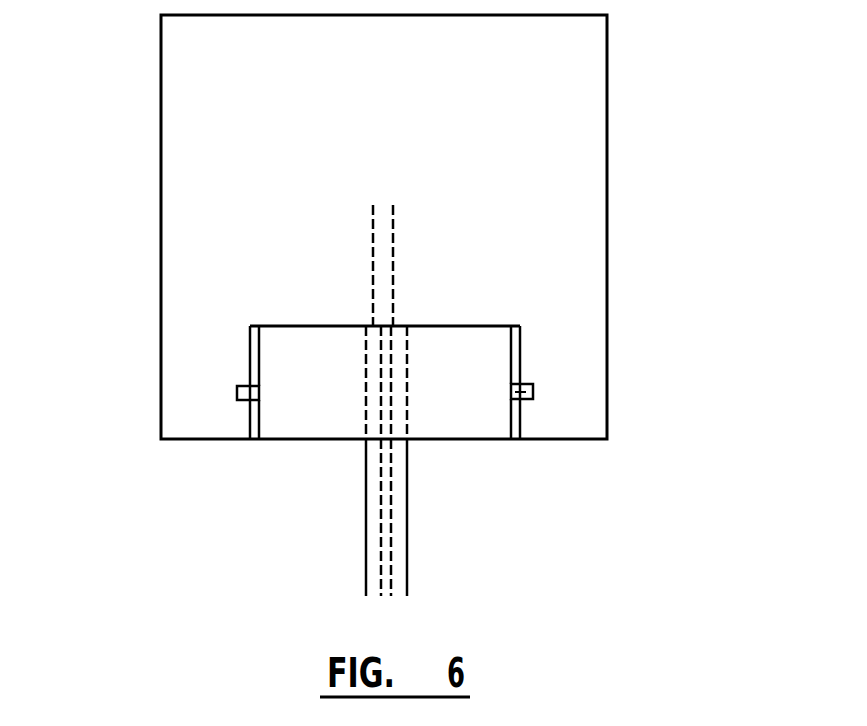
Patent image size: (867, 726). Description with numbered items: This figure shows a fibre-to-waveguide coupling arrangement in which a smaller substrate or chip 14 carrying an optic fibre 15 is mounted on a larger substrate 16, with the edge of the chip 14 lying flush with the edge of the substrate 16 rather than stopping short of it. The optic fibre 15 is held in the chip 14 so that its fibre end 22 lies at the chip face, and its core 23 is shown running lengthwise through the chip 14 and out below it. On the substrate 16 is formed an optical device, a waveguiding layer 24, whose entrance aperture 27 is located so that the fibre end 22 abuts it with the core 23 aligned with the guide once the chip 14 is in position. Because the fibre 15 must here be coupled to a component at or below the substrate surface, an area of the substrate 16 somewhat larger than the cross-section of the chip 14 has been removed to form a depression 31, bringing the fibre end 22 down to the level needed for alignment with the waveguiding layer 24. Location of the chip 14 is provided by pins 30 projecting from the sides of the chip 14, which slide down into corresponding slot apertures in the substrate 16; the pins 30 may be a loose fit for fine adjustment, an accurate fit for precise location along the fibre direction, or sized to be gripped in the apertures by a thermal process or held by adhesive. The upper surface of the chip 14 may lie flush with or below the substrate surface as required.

The substrate 16 is at (508, 108).
The chip 14 is at (466, 394).
The depression 31 is at (520, 358).
The pins 30 is at (237, 392).
The waveguiding layer 24 is at (388, 235).
The entrance aperture 27 is at (383, 326).
The fibre end 22 is at (376, 328).
The optic fibre 15 is at (407, 505).
The core 23 is at (385, 565).